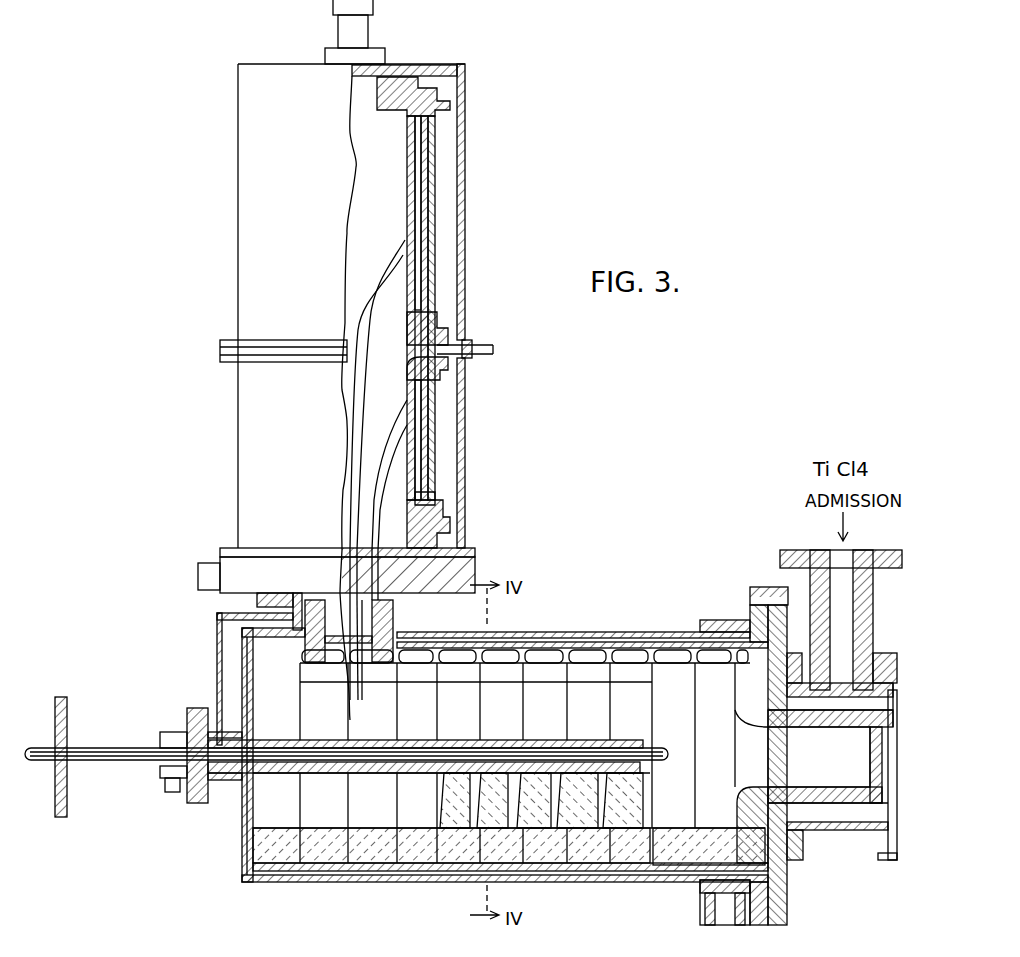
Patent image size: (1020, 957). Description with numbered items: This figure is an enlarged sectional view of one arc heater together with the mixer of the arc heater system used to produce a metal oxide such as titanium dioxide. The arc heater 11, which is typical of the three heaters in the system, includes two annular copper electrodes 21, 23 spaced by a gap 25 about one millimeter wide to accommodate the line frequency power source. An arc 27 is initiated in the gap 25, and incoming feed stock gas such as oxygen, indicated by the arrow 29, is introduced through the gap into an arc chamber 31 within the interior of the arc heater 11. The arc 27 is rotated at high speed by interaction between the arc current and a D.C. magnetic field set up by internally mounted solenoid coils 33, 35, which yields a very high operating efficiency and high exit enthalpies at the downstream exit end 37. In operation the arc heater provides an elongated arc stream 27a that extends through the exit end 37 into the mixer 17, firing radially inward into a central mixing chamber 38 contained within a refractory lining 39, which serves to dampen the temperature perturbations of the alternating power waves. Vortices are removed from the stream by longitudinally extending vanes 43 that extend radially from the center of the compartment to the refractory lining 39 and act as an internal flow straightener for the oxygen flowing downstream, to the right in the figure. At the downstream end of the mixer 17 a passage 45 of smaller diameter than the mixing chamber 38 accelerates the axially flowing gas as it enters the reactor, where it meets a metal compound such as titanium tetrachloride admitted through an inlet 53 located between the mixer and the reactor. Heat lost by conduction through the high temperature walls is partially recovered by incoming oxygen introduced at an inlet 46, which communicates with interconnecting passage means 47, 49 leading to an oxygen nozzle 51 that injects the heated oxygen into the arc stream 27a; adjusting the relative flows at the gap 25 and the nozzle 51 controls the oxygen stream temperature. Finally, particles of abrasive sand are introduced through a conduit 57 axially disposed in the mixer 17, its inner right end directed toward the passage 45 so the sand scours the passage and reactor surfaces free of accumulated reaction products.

The arc heater 11 is at (433, 183).
The mixer 17 is at (548, 640).
The annular copper electrode 21 is at (407, 160).
The annular copper electrode 23 is at (407, 438).
The gap 25 is at (443, 353).
The arc 27 is at (368, 342).
The elongated arc stream 27a is at (357, 697).
The arrow (incoming feed stock gas) 29 is at (506, 354).
The arc chamber 31 is at (430, 498).
The solenoid coil 33 is at (418, 212).
The solenoid coil 35 is at (420, 447).
The exit end 37 is at (407, 529).
The mixing chamber 38 is at (418, 688).
The refractory lining 39 is at (588, 672).
The vanes 43 is at (518, 709).
The passage 45 is at (803, 727).
The inlet 46 is at (718, 925).
The passage means 47 is at (652, 635).
The passage means 49 is at (242, 815).
The oxygen nozzle 51 is at (378, 612).
The inlet 53 is at (862, 618).
The conduit 57 is at (657, 762).